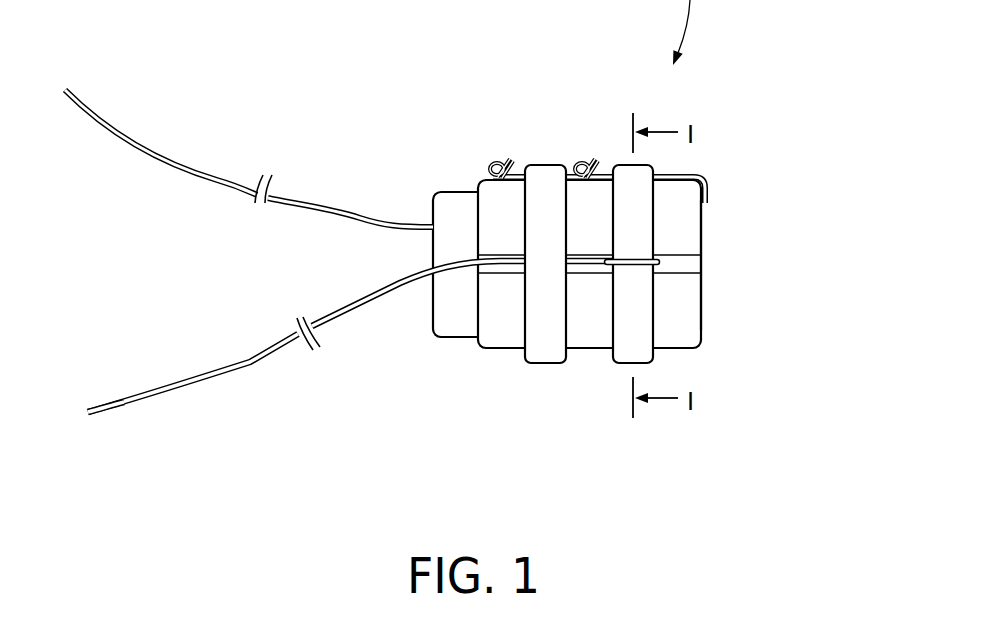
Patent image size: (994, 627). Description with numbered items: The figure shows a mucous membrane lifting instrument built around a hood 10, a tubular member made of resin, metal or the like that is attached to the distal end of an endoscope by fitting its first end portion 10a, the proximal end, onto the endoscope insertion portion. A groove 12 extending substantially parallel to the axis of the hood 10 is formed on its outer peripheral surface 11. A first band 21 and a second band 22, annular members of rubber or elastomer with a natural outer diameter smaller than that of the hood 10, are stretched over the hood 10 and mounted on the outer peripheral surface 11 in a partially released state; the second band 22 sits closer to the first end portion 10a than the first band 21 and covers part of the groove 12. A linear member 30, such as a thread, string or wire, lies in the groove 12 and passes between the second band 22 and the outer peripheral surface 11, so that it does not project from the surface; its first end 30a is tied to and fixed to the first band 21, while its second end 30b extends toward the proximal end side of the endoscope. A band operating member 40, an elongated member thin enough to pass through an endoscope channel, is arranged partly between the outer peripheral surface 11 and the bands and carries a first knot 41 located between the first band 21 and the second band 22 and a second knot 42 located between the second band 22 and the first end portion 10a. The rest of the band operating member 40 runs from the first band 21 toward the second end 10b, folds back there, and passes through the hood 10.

The hood 10 is at (474, 359).
The first end portion 10a is at (433, 316).
The second end 10b is at (702, 327).
The outer peripheral surface 11 is at (586, 350).
The groove 12 is at (674, 255).
The first band 21 is at (626, 363).
The second band 22 is at (547, 363).
The linear member 30 is at (247, 363).
The first end of the linear member 30a is at (638, 270).
The second end of the linear member 30b is at (98, 384).
The band operating member 40 is at (320, 200).
The first knot 41 is at (583, 156).
The second knot 42 is at (496, 160).